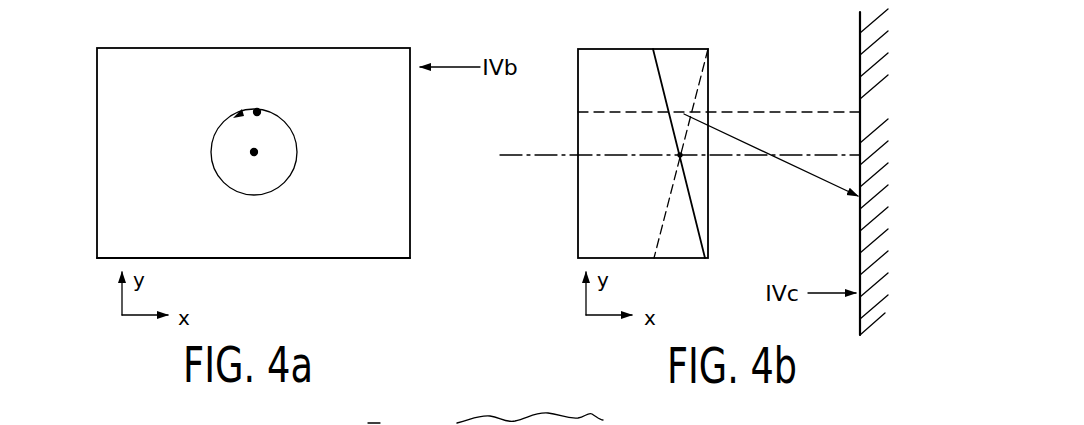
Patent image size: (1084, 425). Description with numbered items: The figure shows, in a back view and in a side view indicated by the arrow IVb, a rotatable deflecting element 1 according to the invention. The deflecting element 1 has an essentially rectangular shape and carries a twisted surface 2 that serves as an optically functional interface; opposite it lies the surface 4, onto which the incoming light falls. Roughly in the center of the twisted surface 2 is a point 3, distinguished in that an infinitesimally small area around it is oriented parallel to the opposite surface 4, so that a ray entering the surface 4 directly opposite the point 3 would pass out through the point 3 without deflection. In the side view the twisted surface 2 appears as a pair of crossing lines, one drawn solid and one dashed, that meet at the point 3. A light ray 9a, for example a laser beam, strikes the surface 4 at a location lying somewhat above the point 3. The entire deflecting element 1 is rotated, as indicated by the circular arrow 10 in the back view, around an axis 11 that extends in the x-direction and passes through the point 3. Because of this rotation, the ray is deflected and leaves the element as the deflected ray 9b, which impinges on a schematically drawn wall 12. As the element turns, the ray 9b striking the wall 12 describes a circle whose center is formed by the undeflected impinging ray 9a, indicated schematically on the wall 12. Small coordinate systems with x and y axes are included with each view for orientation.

In FIG. 4a, the deflecting element 1 is at (345, 262).
In FIG. 4a, the surface 4 is at (264, 250).
In FIG. 4a, the circular arrow 10 is at (213, 142).
In FIG. 4a, the axis 11 is at (254, 152).
In FIG. 4b, the axis 11 is at (533, 157).
In FIG. 4a, the light ray 9a is at (258, 110).
In FIG. 4b, the light ray 9a is at (578, 112).
In FIG. 4b, the twisted surface 2 is at (700, 228).
In FIG. 4b, the point 3 is at (684, 160).
In FIG. 4b, the deflected ray 9b is at (800, 172).
In FIG. 4b, the wall 12 is at (860, 60).